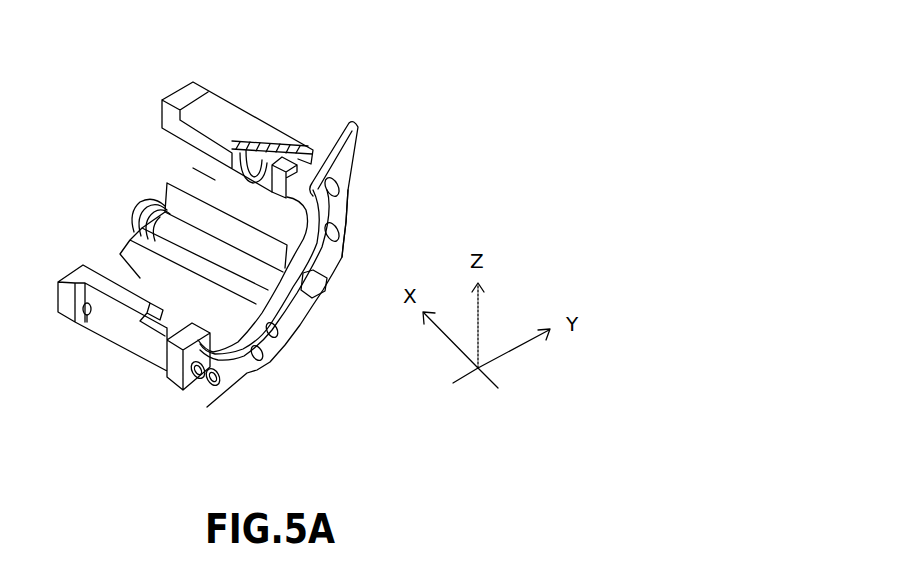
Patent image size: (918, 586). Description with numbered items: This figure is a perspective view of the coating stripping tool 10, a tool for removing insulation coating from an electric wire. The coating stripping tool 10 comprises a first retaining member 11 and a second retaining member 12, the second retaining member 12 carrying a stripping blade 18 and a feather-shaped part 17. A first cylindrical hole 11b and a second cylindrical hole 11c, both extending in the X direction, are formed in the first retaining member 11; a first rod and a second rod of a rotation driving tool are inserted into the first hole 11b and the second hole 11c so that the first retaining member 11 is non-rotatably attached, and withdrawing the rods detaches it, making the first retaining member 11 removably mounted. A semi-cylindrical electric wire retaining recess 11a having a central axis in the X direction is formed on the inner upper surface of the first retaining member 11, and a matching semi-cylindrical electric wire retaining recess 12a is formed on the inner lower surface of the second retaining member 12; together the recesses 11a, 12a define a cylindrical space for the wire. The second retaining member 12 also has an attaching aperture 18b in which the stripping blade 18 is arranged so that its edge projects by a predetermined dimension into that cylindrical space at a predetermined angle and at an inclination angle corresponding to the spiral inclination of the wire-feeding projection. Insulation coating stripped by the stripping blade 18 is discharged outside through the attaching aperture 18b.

The coating stripping tool 10 is at (481, 70).
The first retaining member 11 is at (120, 337).
The electric wire retaining recess 11a is at (132, 272).
The first cylindrical hole 11b is at (263, 363).
The second cylindrical hole 11c is at (207, 385).
The second retaining member 12 is at (224, 130).
The electric wire retaining recess 12a is at (193, 168).
The feather-shaped part 17 is at (347, 157).
The stripping blade 18 is at (287, 138).
The attaching aperture 18b is at (250, 138).